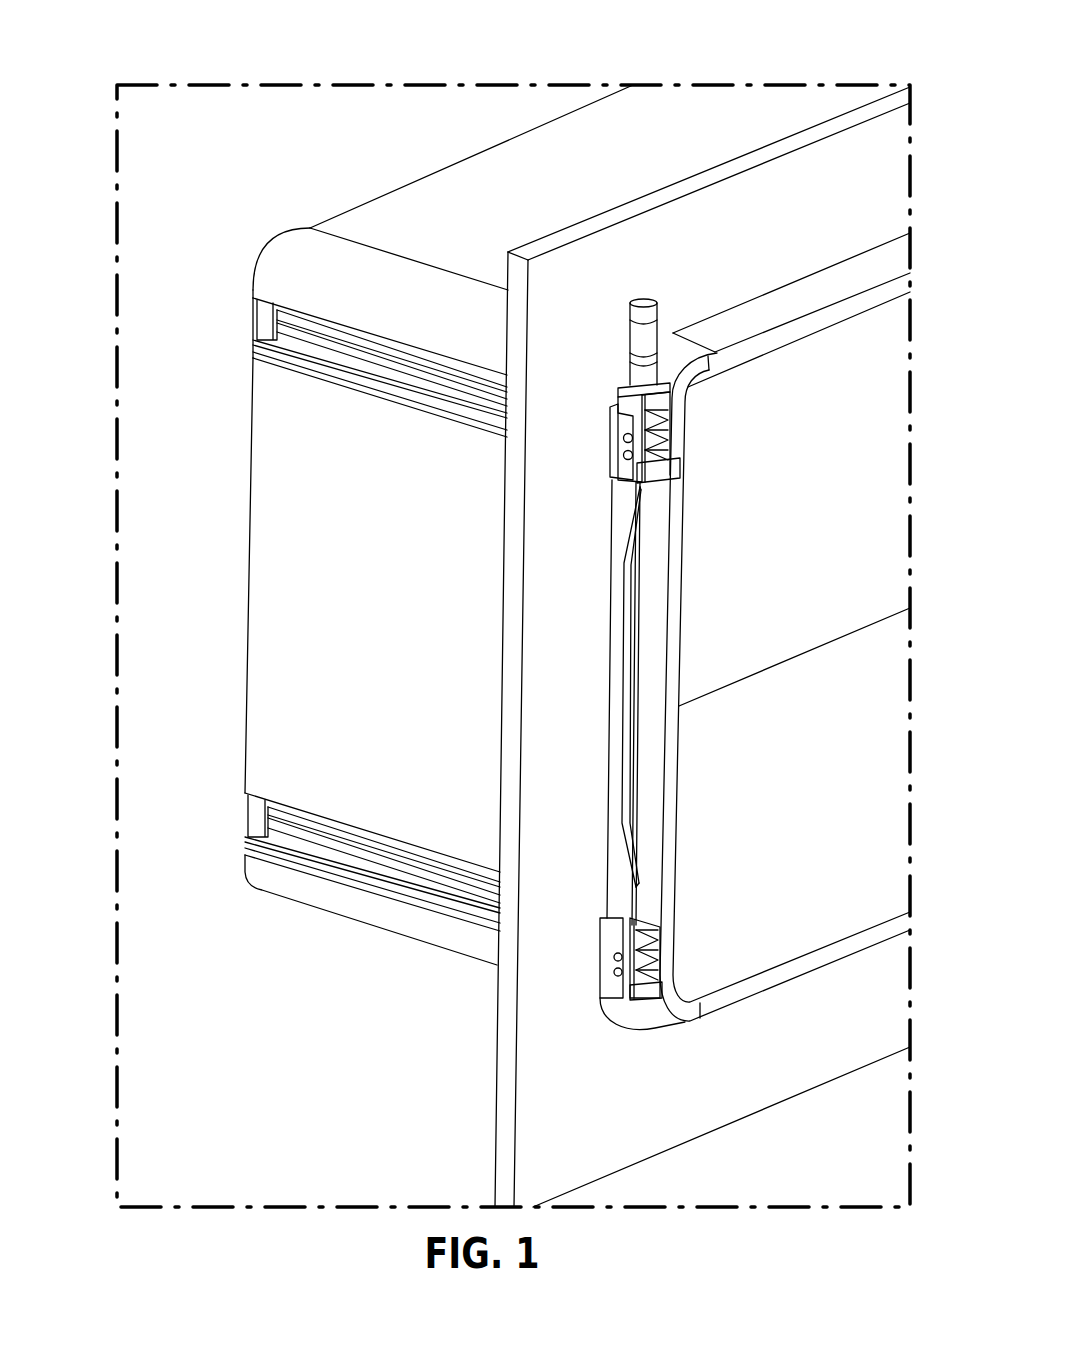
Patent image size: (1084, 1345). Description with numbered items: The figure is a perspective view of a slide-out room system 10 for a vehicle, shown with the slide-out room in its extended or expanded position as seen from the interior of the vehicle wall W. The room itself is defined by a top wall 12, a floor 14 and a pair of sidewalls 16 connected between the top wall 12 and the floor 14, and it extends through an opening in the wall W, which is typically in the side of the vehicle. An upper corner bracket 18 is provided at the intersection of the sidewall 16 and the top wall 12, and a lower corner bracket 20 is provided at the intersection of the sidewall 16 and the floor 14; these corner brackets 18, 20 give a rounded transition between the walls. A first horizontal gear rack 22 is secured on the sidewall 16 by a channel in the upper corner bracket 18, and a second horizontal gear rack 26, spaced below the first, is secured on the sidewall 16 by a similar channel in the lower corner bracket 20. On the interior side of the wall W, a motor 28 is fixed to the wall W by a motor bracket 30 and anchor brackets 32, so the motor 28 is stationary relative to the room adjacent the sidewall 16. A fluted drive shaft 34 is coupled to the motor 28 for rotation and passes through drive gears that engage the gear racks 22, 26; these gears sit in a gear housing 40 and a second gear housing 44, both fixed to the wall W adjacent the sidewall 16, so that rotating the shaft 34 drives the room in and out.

The slide-out room system 10 is at (178, 160).
The top wall 12 is at (478, 185).
The floor 14 is at (855, 830).
The sidewall 16 is at (330, 565).
The upper corner bracket 18 is at (292, 280).
The lower corner bracket 20 is at (345, 905).
The first horizontal gear rack 22 is at (310, 342).
The second horizontal gear rack 26 is at (283, 833).
The motor 28 is at (645, 335).
The motor bracket 30 is at (623, 518).
The anchor bracket 32 is at (617, 425).
The drive shaft 34 is at (635, 708).
The gear housing 40 is at (657, 482).
The second gear housing 44 is at (658, 927).
The wall W is at (558, 1080).